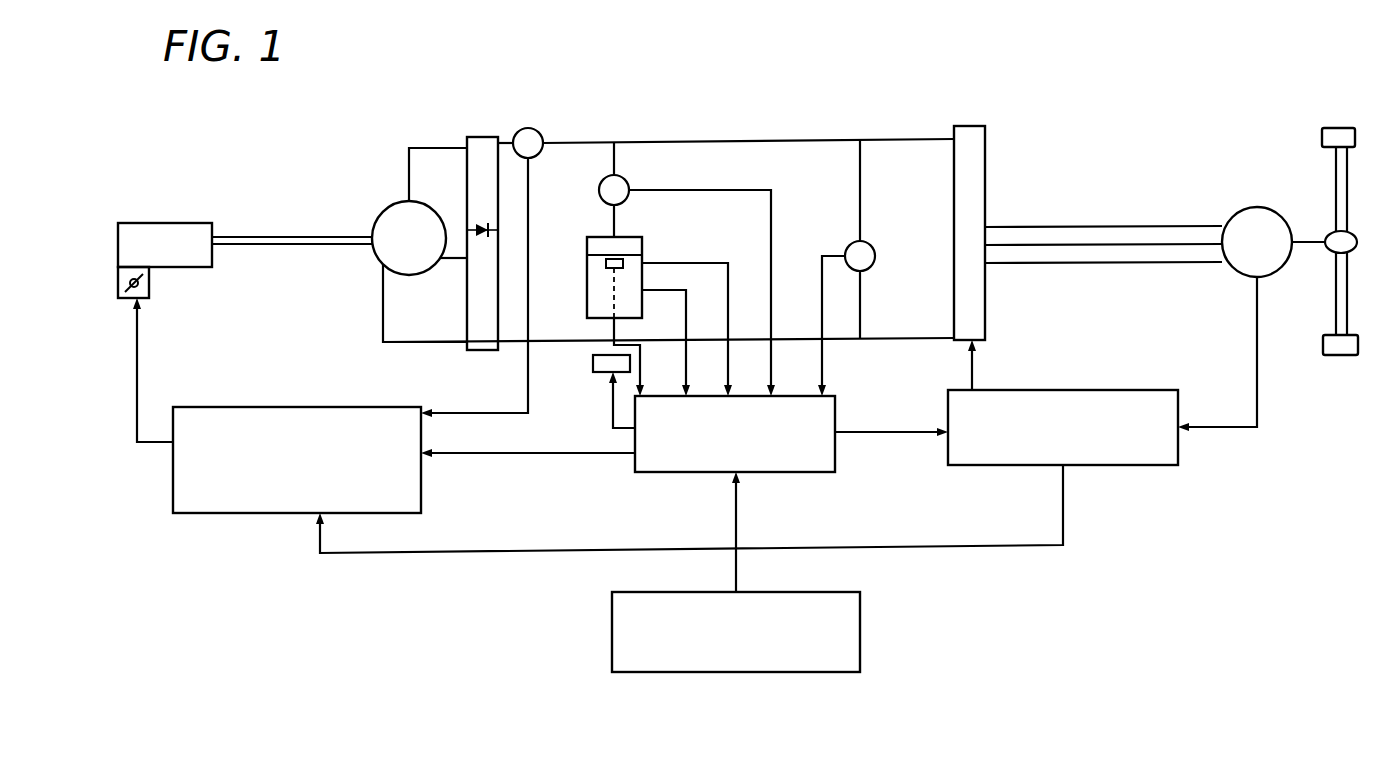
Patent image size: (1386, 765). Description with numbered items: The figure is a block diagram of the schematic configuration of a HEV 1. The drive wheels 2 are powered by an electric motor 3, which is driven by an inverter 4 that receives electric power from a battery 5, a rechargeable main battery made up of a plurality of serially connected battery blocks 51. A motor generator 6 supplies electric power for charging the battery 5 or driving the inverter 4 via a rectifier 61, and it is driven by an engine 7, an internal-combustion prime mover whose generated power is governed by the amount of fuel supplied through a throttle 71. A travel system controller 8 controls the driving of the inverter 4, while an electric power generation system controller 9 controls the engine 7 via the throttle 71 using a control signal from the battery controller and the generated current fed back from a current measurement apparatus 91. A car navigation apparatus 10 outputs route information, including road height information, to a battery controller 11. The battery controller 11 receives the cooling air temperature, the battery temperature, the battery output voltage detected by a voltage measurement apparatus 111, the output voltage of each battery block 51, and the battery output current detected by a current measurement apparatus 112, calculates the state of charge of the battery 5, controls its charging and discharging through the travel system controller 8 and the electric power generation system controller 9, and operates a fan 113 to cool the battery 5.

The HEV 1 is at (875, 86).
The drive wheels 2 is at (1338, 128).
The electric motor 3 is at (1257, 207).
The inverter 4 is at (972, 126).
The battery 5 is at (587, 240).
The battery block 51 is at (606, 268).
The motor generator 6 is at (386, 207).
The rectifier 61 is at (481, 137).
The engine 7 is at (168, 223).
The throttle 71 is at (118, 286).
The travel system controller 8 is at (1147, 390).
The electric power generation system controller 9 is at (228, 407).
The current measurement apparatus 91 is at (539, 131).
The car navigation apparatus 10 is at (860, 625).
The battery controller 11 is at (843, 402).
The voltage measurement apparatus 111 is at (875, 256).
The current measurement apparatus 112 is at (629, 186).
The fan 113 is at (596, 372).